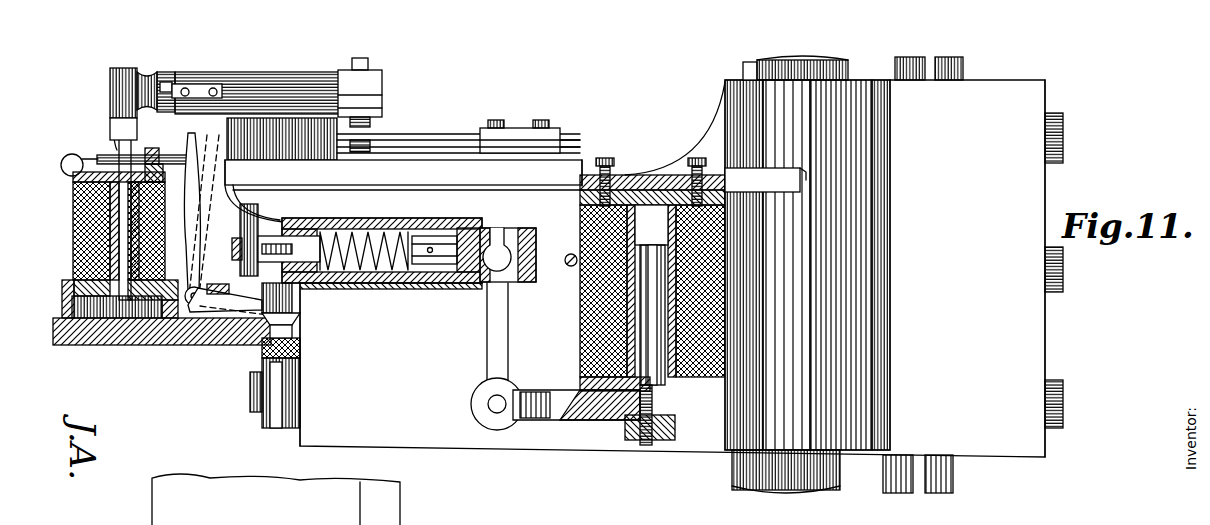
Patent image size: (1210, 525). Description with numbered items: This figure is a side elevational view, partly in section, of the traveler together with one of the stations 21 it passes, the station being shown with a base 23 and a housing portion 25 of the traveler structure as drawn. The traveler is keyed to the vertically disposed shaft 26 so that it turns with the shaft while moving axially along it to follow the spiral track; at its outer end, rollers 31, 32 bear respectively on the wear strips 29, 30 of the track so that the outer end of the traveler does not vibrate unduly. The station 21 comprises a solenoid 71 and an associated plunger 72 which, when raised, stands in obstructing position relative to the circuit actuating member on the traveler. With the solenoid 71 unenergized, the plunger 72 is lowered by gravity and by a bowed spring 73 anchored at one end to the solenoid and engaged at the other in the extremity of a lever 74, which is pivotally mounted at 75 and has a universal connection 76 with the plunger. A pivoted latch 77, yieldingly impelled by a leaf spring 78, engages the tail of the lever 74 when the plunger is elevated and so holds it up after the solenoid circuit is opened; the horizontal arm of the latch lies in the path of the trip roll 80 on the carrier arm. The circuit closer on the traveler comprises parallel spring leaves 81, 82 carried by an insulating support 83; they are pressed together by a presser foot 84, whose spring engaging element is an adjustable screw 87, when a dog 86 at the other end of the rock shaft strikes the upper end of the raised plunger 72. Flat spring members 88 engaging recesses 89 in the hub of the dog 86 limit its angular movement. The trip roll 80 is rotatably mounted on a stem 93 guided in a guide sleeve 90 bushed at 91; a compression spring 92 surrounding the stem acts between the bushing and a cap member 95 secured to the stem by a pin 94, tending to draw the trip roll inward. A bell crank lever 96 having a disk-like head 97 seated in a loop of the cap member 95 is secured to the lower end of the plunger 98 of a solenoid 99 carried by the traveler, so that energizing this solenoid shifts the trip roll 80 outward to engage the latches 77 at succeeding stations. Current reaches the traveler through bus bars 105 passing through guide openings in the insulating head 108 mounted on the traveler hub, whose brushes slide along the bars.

The station 21 is at (66, 215).
The base plate 23 is at (112, 345).
The frame box 25 is at (566, 440).
The vertically disposed shaft 26 is at (771, 484).
The wear strip 29 is at (292, 318).
The wear strip 30 is at (300, 348).
The roller 31 is at (296, 300).
The roller 32 is at (278, 394).
The solenoid 71 is at (75, 256).
The plunger 72 is at (68, 294).
The spring 73 is at (61, 163).
The lever 74 is at (104, 157).
The pivot 75 is at (153, 157).
The universal connection 76 is at (109, 148).
The pivoted latch 77 is at (195, 180).
The leaf spring 78 is at (190, 330).
The trip roll 80 is at (258, 210).
The spring leaf 81 is at (446, 132).
The spring leaf 82 is at (398, 152).
The insulating support 83 is at (516, 130).
The presser foot 84 is at (376, 86).
The dog 86 is at (128, 70).
The adjustable screw 87 is at (366, 60).
The flat spring member 88 is at (200, 90).
The recess 89 is at (168, 78).
The guide sleeve 90 is at (400, 226).
The bushing 91 is at (324, 227).
The compression spring 92 is at (400, 289).
The stem 93 is at (488, 224).
The pin 94 is at (450, 236).
The cap member 95 is at (508, 245).
The bell crank lever 96 is at (506, 354).
The disk-like head 97 is at (560, 256).
The plunger 98 is at (720, 328).
The solenoid 99 is at (722, 258).
The bus bar 105 is at (935, 492).
The head 108 is at (990, 92).